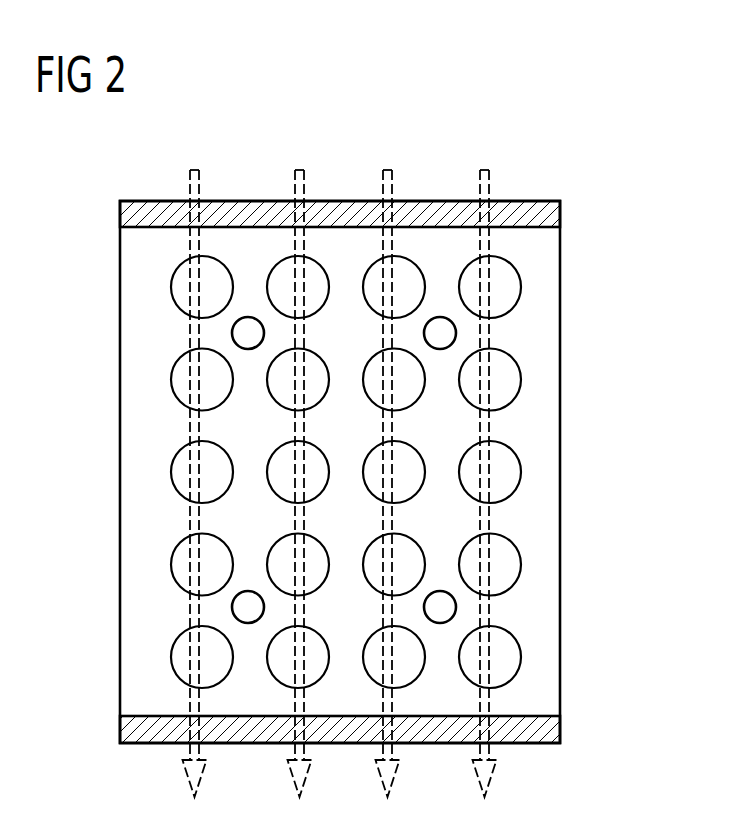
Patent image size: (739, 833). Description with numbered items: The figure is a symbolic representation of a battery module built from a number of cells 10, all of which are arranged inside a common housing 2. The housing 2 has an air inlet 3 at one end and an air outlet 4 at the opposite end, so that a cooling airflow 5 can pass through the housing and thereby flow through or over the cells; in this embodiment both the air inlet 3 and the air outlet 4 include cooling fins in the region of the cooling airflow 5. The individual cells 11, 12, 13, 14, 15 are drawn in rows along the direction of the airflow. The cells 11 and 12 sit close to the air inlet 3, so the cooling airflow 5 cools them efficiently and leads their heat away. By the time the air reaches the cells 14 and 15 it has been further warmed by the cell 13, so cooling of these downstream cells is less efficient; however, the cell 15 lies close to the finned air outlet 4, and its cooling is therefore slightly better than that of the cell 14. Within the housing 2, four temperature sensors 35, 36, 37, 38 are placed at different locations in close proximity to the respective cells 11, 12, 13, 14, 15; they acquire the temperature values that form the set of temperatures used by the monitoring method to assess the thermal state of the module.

The number of cells 10 is at (104, 179).
The housing 2 is at (558, 473).
The air inlet 3 is at (554, 214).
The air outlet 4 is at (554, 731).
The cooling airflow 5 is at (192, 170).
The cell 11 is at (171, 287).
The cell 12 is at (171, 380).
The cell 13 is at (171, 472).
The cell 14 is at (171, 564).
The cell 15 is at (171, 657).
The temperature sensor 35 is at (232, 333).
The temperature sensor 36 is at (232, 607).
The temperature sensor 37 is at (457, 333).
The temperature sensor 38 is at (457, 607).